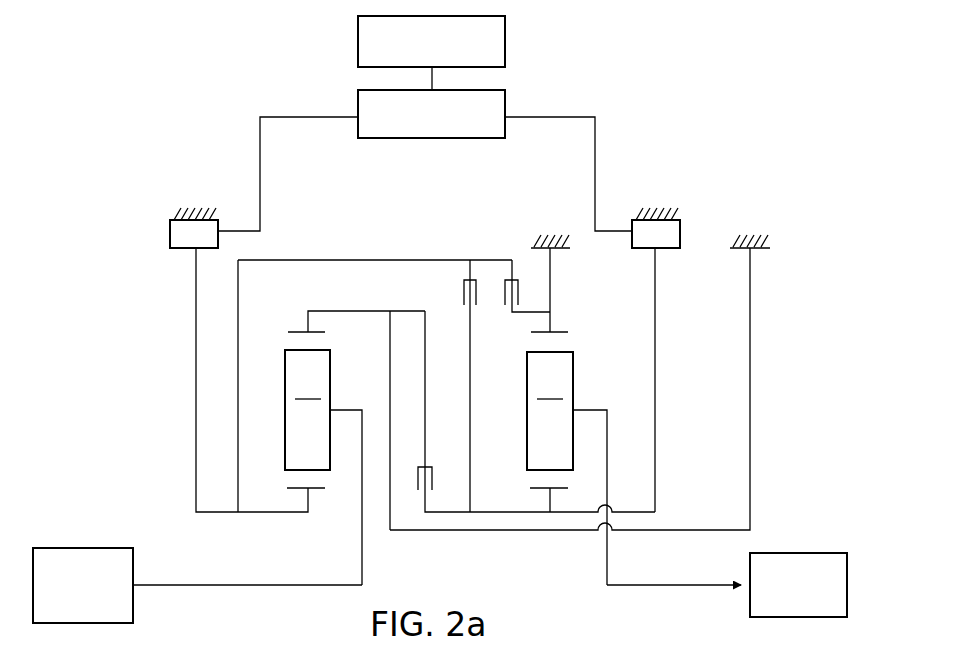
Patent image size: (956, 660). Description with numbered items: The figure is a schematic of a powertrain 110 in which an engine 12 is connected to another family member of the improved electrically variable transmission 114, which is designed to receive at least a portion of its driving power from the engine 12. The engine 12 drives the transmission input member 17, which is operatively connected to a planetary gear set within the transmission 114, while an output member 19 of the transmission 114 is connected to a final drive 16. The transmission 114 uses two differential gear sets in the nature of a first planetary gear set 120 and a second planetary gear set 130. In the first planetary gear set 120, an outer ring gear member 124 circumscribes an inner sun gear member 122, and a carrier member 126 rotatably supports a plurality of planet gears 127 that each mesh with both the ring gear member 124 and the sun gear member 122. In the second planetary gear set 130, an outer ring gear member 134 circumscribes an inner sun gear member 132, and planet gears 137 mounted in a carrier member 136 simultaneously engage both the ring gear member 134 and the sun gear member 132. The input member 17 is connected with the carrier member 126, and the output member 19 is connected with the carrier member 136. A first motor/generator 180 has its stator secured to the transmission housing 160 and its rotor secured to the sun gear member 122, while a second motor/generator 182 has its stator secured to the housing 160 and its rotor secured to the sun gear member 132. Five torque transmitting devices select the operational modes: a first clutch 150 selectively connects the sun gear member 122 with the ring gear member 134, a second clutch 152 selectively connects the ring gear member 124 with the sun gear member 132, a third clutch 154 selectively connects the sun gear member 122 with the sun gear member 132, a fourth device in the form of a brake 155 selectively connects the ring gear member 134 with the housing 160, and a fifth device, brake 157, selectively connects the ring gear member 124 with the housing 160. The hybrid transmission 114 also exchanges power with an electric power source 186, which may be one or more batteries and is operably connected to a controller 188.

The engine 12 is at (101, 528).
The final drive 16 is at (786, 539).
The transmission input member 17 is at (167, 588).
The output member 19 is at (708, 588).
The powertrain 110 is at (127, 379).
The electrically variable transmission 114 is at (157, 330).
The first planetary gear set 120 is at (300, 493).
The sun gear member 122 is at (318, 490).
The ring gear member 124 is at (300, 330).
The carrier member 126 is at (342, 404).
The planet gears 127 is at (307, 410).
The second planetary gear set 130 is at (541, 493).
The sun gear member 132 is at (560, 490).
The ring gear member 134 is at (563, 330).
The carrier member 136 is at (580, 404).
The planet gears 137 is at (550, 411).
The clutch 150 is at (507, 278).
The clutch 152 is at (433, 493).
The clutch 154 is at (463, 278).
The brake 155 is at (538, 229).
The brake 157 is at (778, 231).
The transmission housing 160 is at (178, 210).
The first motor/generator 180 is at (163, 214).
The second motor/generator 182 is at (690, 214).
The electric power source 186 is at (358, 42).
The controller 188 is at (358, 107).